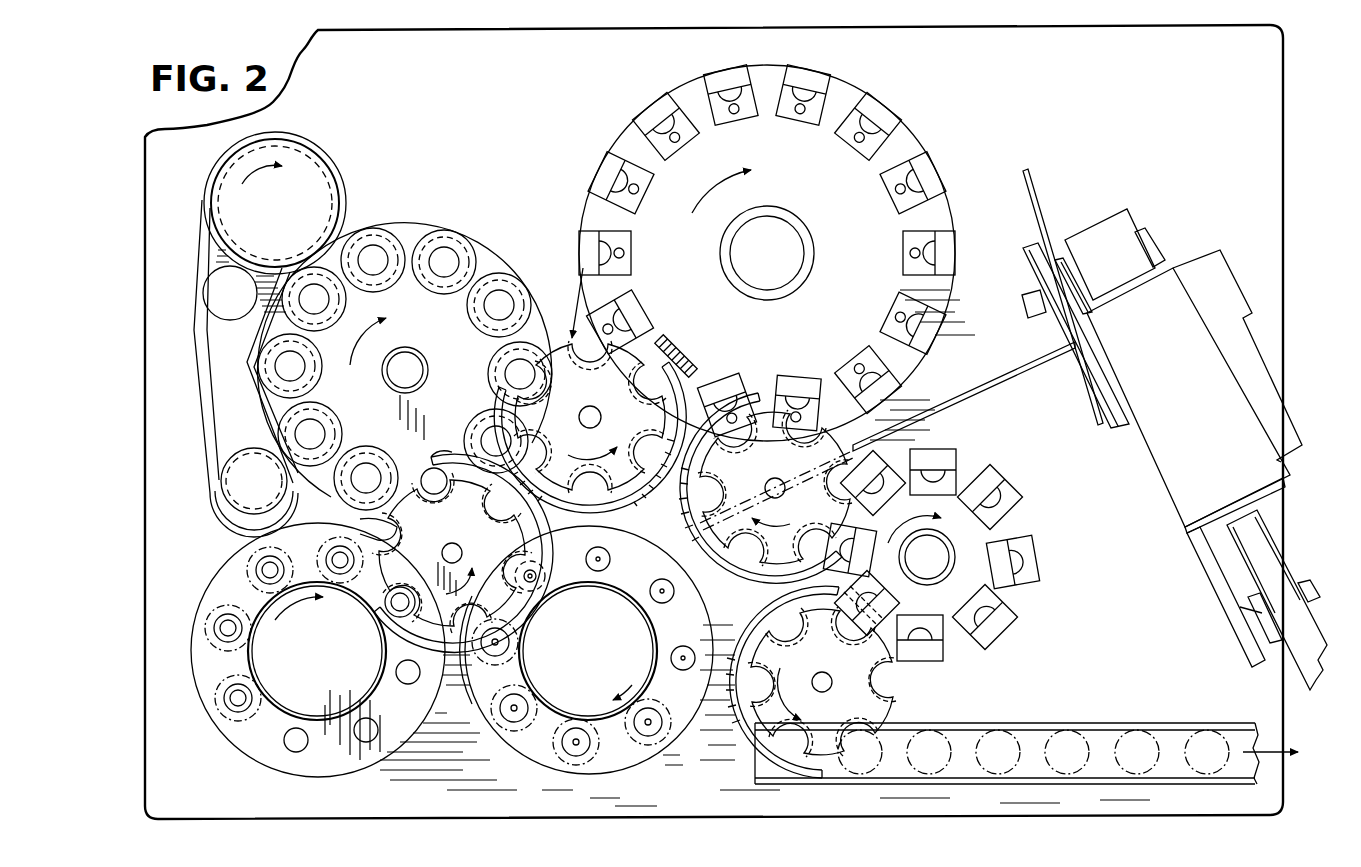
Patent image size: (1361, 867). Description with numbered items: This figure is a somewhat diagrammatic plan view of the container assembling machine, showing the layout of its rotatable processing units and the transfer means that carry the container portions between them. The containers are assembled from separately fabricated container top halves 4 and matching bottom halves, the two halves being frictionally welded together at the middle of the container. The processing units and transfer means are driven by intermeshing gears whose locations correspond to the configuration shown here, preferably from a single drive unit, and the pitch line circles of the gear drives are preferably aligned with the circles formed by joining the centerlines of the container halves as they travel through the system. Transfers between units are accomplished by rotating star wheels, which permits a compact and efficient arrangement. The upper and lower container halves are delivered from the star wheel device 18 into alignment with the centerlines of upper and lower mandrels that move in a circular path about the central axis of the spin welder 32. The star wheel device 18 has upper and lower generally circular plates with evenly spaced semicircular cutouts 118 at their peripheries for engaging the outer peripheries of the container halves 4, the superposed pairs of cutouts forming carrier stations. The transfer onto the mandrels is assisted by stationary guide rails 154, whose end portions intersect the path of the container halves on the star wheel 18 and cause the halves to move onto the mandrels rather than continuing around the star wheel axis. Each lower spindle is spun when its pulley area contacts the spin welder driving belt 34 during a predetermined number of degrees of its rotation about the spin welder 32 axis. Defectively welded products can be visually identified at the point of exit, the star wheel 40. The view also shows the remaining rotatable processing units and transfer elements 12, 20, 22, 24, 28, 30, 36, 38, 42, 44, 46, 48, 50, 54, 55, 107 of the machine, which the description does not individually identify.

The container top halves 4 is at (228, 717).
The first turntable 12 is at (335, 756).
The star wheel device 18 is at (513, 630).
The nest 20 is at (220, 703).
The transfer star wheel 22 is at (383, 598).
The second turntable 24 is at (627, 753).
The nest 28 is at (667, 734).
The outer guide rail 30 is at (541, 540).
The spin welder 32 is at (415, 237).
The spin welder driving belt 34 is at (192, 346).
The transfer star wheel 36 is at (640, 303).
The indexing wheel 38 is at (632, 150).
The star wheel 40 is at (692, 508).
The pusher rod 42 is at (995, 383).
The press unit 44 is at (1149, 408).
The carrier block 46 is at (962, 588).
The discharge star wheel 48 is at (867, 708).
The discharge conveyor 50 is at (1033, 747).
The carrier blocks 54 is at (1018, 479).
The pusher head 55 is at (880, 445).
The turntable rim 107 is at (460, 663).
The cutouts 118 is at (385, 530).
The stationary guide rails 154 is at (469, 438).